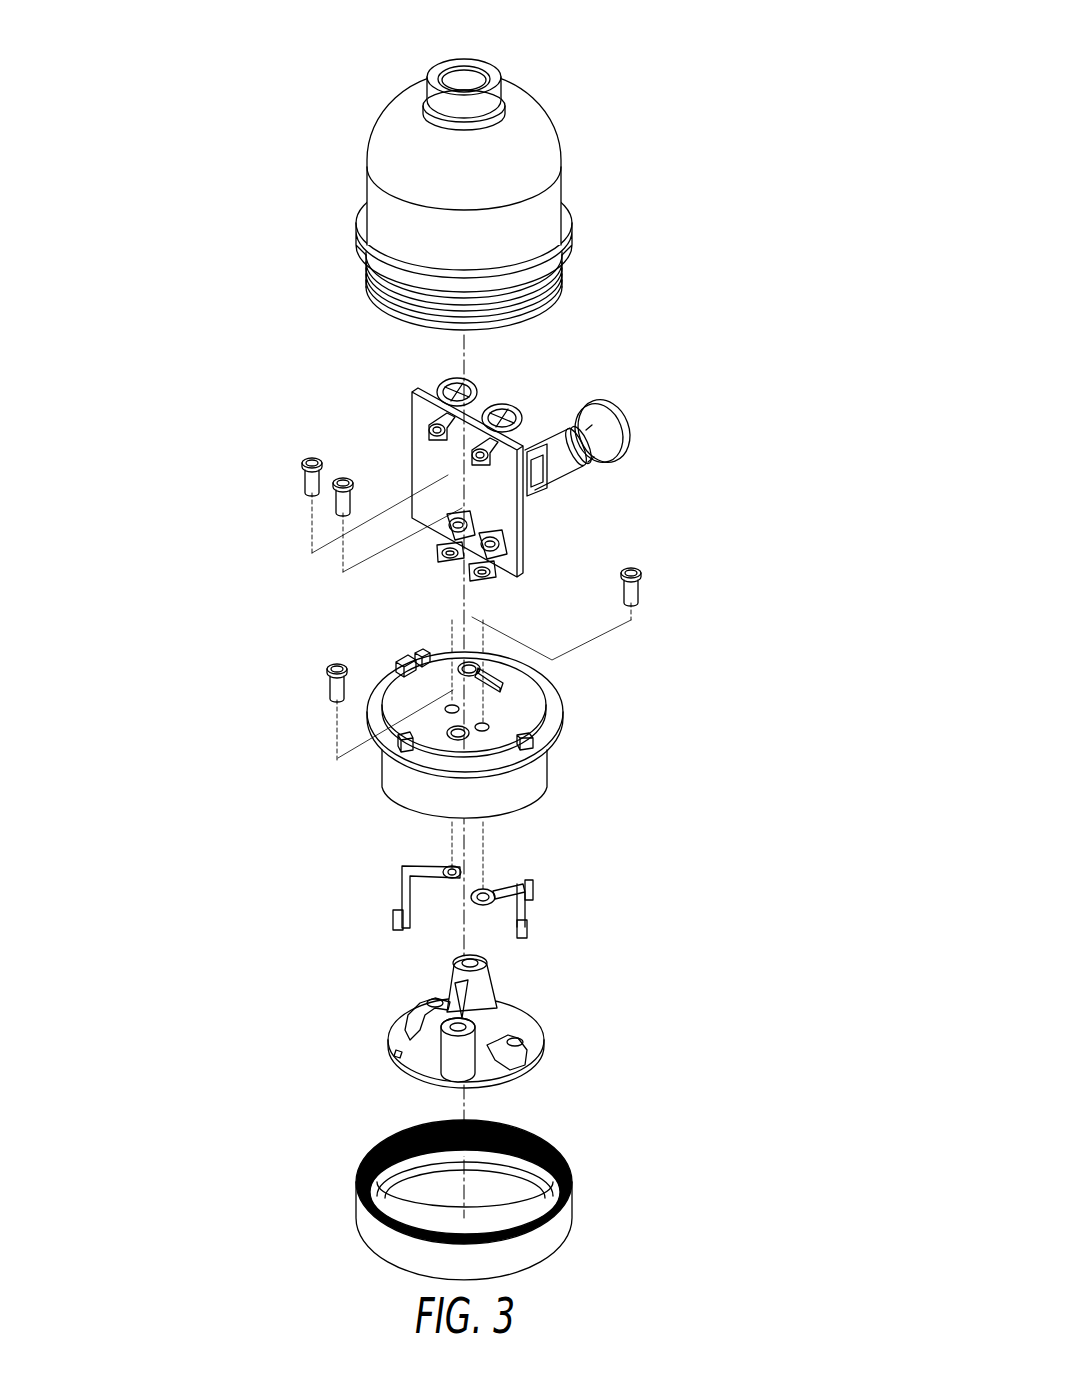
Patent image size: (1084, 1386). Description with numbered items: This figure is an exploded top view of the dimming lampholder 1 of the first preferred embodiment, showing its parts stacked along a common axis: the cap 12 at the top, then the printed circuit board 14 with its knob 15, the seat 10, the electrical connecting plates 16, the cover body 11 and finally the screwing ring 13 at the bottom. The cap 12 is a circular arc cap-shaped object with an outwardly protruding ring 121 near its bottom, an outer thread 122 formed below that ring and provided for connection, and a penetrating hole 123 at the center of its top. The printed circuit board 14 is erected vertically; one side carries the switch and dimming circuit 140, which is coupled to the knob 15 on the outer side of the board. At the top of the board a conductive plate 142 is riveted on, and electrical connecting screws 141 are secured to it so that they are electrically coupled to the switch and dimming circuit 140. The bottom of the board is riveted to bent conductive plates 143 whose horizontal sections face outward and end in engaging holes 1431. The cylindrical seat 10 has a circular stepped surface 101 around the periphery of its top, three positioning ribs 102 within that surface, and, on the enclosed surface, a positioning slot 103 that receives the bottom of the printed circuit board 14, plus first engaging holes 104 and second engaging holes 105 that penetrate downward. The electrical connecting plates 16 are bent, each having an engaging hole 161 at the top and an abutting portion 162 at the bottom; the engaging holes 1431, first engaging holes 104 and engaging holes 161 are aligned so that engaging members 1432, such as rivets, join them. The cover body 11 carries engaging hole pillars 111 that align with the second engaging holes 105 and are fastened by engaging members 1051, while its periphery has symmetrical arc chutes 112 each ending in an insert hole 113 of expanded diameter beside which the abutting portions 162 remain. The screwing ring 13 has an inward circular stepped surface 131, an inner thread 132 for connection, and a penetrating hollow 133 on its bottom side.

The dimming lampholder 1 is at (688, 343).
The seat 10 is at (465, 729).
The circular stepped surface 101 is at (553, 703).
The positioning ribs 102 is at (557, 738).
The positioning slot 103 is at (415, 652).
The first engaging holes 104 is at (450, 706).
The second engaging holes 105 is at (480, 663).
The engaging members 1051 is at (330, 685).
The cover body 11 is at (463, 1043).
The engaging hole pillars 111 is at (482, 987).
The arc chutes 112 is at (405, 1030).
The insert hole 113 is at (418, 1002).
The cap 12 is at (506, 165).
The outwardly protruding ring 121 is at (570, 248).
The outer thread 122 is at (550, 300).
The penetrating hole 123 is at (468, 80).
The screwing ring 13 is at (458, 1188).
The circular stepped surface 131 is at (378, 1190).
The inner thread 132 is at (390, 1138).
The penetrating hollow 133 is at (410, 1217).
The printed circuit board 14 is at (417, 478).
The switch and dimming circuit 140 is at (530, 502).
The electrical connecting screws 141 is at (447, 387).
The conductive plate 142 is at (435, 412).
The conductive plates 143 is at (473, 572).
The engaging hole 1431 is at (447, 550).
The engaging members 1432 is at (420, 450).
The knob 15 is at (607, 420).
The electrical connecting plates 16 is at (464, 894).
The engaging hole 161 is at (450, 866).
The abutting portion 162 is at (400, 893).